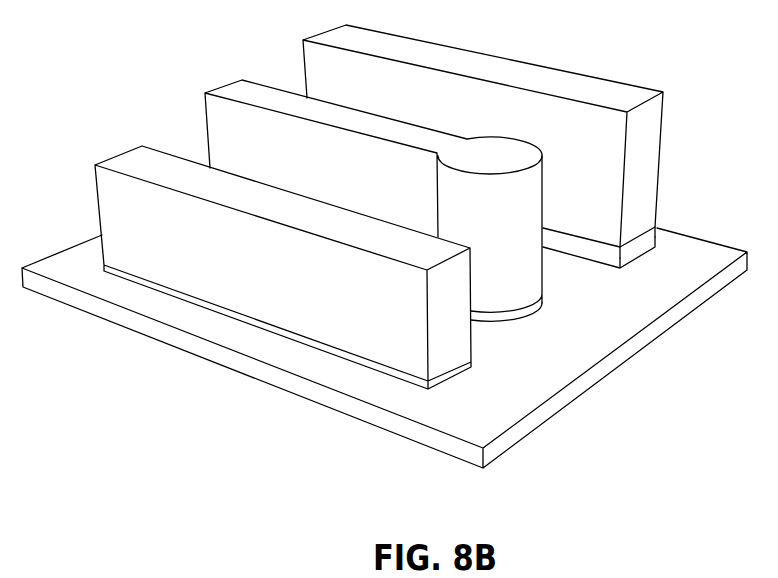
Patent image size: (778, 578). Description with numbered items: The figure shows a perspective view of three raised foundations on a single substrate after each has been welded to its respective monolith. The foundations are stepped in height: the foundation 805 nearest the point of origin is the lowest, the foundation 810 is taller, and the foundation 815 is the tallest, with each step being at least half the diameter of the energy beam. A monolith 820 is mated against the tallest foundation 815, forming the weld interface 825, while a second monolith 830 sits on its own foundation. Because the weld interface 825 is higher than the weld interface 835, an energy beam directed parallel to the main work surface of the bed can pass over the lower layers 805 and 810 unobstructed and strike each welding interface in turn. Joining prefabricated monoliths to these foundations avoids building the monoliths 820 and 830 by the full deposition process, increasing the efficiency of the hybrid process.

The foundation 805 is at (398, 375).
The foundation 810 is at (515, 320).
The foundation 815 is at (640, 248).
The monolith 820 is at (645, 133).
The weld interface 825 is at (638, 233).
The monolith 830 is at (205, 112).
The weld interface 835 is at (542, 296).